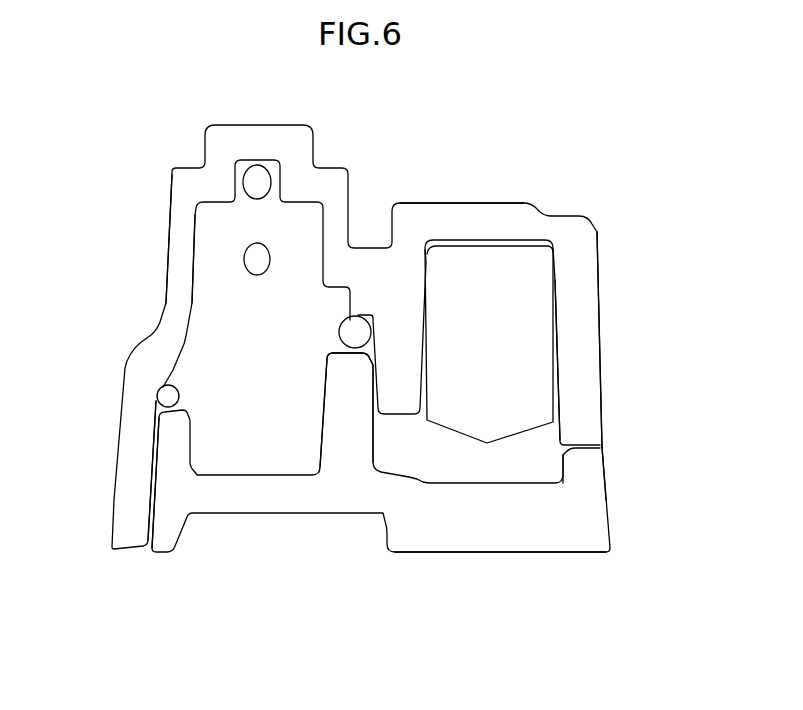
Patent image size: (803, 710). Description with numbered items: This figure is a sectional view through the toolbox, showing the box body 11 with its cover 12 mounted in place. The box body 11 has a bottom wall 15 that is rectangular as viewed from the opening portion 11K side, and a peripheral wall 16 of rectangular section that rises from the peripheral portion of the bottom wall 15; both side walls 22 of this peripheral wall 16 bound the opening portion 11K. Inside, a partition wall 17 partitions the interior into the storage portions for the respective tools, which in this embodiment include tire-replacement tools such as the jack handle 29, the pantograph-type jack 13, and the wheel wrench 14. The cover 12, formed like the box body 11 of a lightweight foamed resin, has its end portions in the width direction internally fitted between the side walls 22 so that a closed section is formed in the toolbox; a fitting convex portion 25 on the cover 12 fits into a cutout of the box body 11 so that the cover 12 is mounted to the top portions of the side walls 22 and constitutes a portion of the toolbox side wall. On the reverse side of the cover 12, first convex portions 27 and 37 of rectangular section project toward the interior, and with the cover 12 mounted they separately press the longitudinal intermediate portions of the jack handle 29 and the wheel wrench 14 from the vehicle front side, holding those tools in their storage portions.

The box body 11 is at (655, 172).
The cover 12 is at (413, 561).
The pantograph-type jack 13 is at (252, 182).
The wheel wrench 14 is at (356, 327).
The bottom wall 15 is at (485, 218).
The peripheral wall 16 is at (411, 302).
The partition wall 17 is at (403, 373).
The side walls 22 is at (181, 290).
The fitting convex portion 25 is at (584, 467).
The first convex portion 27 is at (343, 400).
The jack handle 29 is at (156, 392).
The first convex portion 37 is at (172, 442).
The opening portion 11K is at (487, 467).